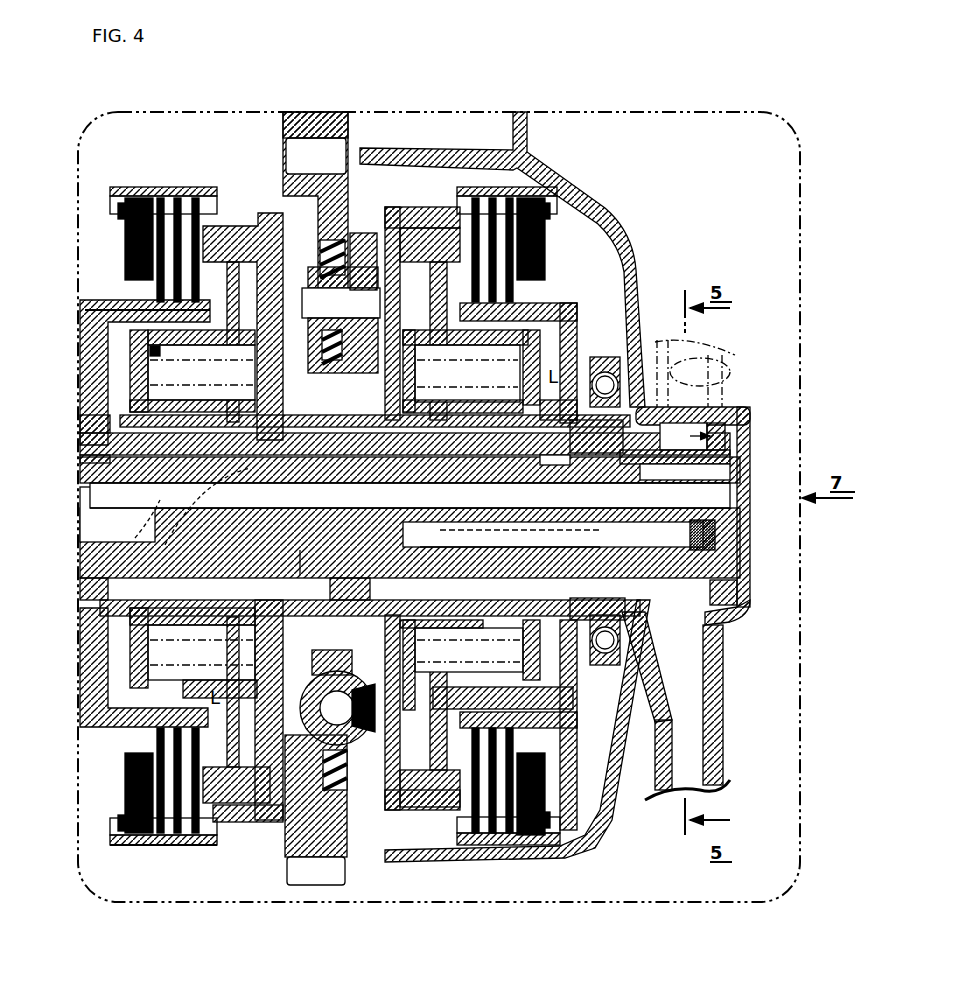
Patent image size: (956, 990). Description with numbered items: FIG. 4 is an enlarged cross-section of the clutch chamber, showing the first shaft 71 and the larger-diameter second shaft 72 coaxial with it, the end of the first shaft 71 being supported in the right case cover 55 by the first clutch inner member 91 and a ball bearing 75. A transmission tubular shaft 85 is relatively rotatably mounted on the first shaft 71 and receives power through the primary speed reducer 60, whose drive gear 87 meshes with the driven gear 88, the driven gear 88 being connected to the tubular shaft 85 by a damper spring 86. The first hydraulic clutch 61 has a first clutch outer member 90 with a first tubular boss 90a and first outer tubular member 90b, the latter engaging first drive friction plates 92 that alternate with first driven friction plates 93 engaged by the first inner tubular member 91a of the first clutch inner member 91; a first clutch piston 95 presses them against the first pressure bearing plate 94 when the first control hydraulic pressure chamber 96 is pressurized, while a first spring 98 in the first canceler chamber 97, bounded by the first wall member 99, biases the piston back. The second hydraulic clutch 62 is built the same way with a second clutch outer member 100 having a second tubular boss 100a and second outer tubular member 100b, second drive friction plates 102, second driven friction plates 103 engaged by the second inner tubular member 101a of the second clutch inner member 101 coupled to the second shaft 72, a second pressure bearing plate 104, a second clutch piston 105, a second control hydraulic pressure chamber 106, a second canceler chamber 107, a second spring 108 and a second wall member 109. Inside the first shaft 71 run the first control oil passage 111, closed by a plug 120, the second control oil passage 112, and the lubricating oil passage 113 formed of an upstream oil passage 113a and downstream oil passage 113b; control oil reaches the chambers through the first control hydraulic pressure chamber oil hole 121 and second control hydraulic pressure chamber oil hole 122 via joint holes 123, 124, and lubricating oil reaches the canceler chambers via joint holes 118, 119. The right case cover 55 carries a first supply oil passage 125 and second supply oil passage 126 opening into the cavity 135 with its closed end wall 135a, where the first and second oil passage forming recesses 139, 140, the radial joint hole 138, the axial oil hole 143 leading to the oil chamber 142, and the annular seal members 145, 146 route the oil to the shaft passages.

The right case cover 55 is at (608, 235).
The primary speed reducer 60 is at (275, 165).
The first hydraulic clutch 61 is at (440, 862).
The second hydraulic clutch 62 is at (138, 850).
The first shaft 71 is at (95, 563).
The second shaft 72 is at (85, 420).
The ball bearing 75 is at (615, 385).
The transmission tubular shaft 85 is at (314, 555).
The damper spring 86 is at (320, 740).
The drive gear 87 is at (340, 130).
The driven gear 88 is at (310, 892).
The first clutch outer member 90 is at (385, 225).
The first tubular boss 90a is at (535, 460).
The first outer tubular member 90b is at (548, 190).
The first clutch inner member 91 is at (577, 305).
The first inner tubular member 91a is at (520, 305).
The first drive friction plates 92 is at (510, 195).
The first driven friction plates 93 is at (510, 838).
The first pressure bearing plate 94 is at (530, 840).
The first clutch piston 95 is at (395, 805).
The first control hydraulic pressure chamber 96 is at (420, 654).
The first canceler chamber 97 is at (570, 705).
The first spring 98 is at (555, 390).
The first wall member 99 is at (505, 650).
The second clutch outer member 100 is at (268, 212).
The second tubular boss 100a is at (192, 371).
The second outer tubular member 100b is at (125, 187).
The second clutch inner member 101 is at (82, 320).
The second inner tubular member 101a is at (140, 308).
The second drive friction plates 102 is at (193, 195).
The second driven friction plates 103 is at (195, 835).
The second pressure bearing plate 104 is at (130, 790).
The second clutch piston 105 is at (225, 820).
The second control hydraulic pressure chamber 106 is at (258, 648).
The second canceler chamber 107 is at (250, 822).
The second spring 108 is at (155, 358).
The second wall member 109 is at (140, 700).
The first control oil passage 111 is at (480, 540).
The second control oil passage 112 is at (362, 492).
The lubricating oil passage 113 is at (140, 520).
The upstream oil passage 113a is at (85, 465).
The downstream oil passage 113b is at (275, 515).
The joint hole 118 is at (490, 410).
The joint hole 119 is at (140, 495).
The plug 120 is at (715, 535).
The first control hydraulic pressure chamber oil hole 121 is at (345, 605).
The second control hydraulic pressure chamber oil hole 122 is at (300, 440).
The joint hole 123 is at (425, 405).
The joint hole 124 is at (340, 406).
The first supply oil passage 125 is at (690, 740).
The second supply oil passage 126 is at (722, 365).
The cavity 135 is at (718, 645).
The closed end wall 135a is at (745, 450).
The radial joint hole 138 is at (655, 535).
The first oil passage forming recess 139 is at (725, 622).
The second oil passage forming recess 140 is at (595, 455).
The oil chamber 142 is at (725, 466).
The axial oil hole 143 is at (720, 418).
The annular seal member 145 is at (660, 650).
The annular seal member 146 is at (735, 605).